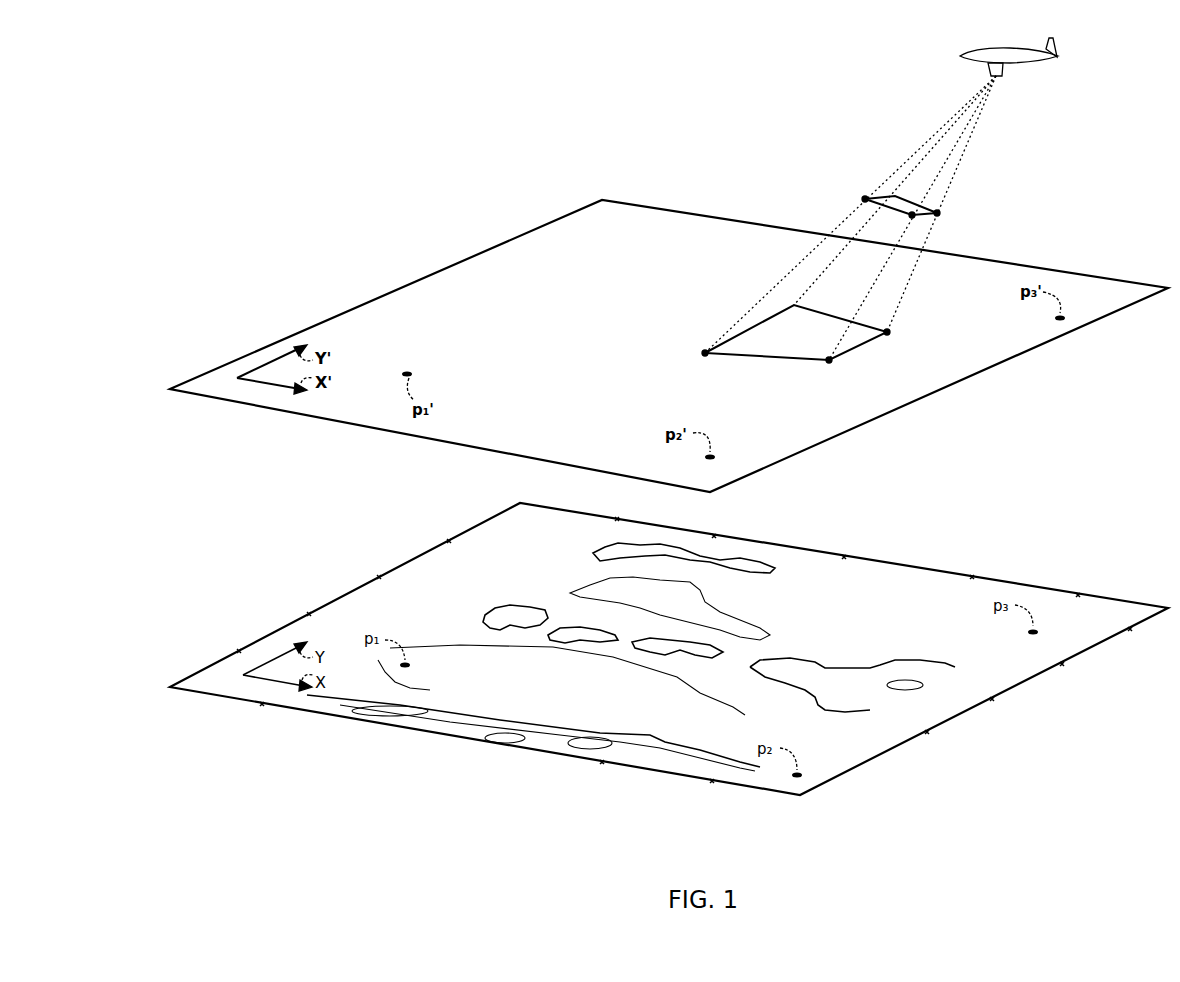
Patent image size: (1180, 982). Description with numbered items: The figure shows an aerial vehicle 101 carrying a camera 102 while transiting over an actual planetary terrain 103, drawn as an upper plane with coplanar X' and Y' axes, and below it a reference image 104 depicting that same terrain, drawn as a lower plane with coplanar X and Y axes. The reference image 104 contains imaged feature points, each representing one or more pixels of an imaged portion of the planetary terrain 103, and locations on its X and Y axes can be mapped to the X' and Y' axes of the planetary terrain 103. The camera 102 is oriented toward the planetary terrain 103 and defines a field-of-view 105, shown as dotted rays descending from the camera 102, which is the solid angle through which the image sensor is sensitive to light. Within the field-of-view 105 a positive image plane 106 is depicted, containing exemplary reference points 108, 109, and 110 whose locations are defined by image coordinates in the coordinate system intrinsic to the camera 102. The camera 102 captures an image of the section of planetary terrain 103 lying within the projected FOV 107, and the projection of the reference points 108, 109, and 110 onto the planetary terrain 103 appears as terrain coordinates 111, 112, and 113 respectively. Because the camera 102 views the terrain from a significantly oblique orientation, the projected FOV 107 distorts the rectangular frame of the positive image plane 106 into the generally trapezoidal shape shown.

The aerial vehicle 101 is at (996, 52).
The camera 102 is at (1005, 67).
The planetary terrain 103 is at (427, 292).
The reference image 104 is at (428, 587).
The field-of-view 105 is at (934, 112).
The positive image plane 106 is at (940, 205).
The projected FOV 107 is at (826, 343).
The reference point 108 is at (862, 200).
The reference point 109 is at (914, 218).
The reference point 110 is at (940, 214).
The terrain coordinate 111 is at (703, 350).
The terrain coordinate 112 is at (832, 362).
The terrain coordinate 113 is at (890, 332).